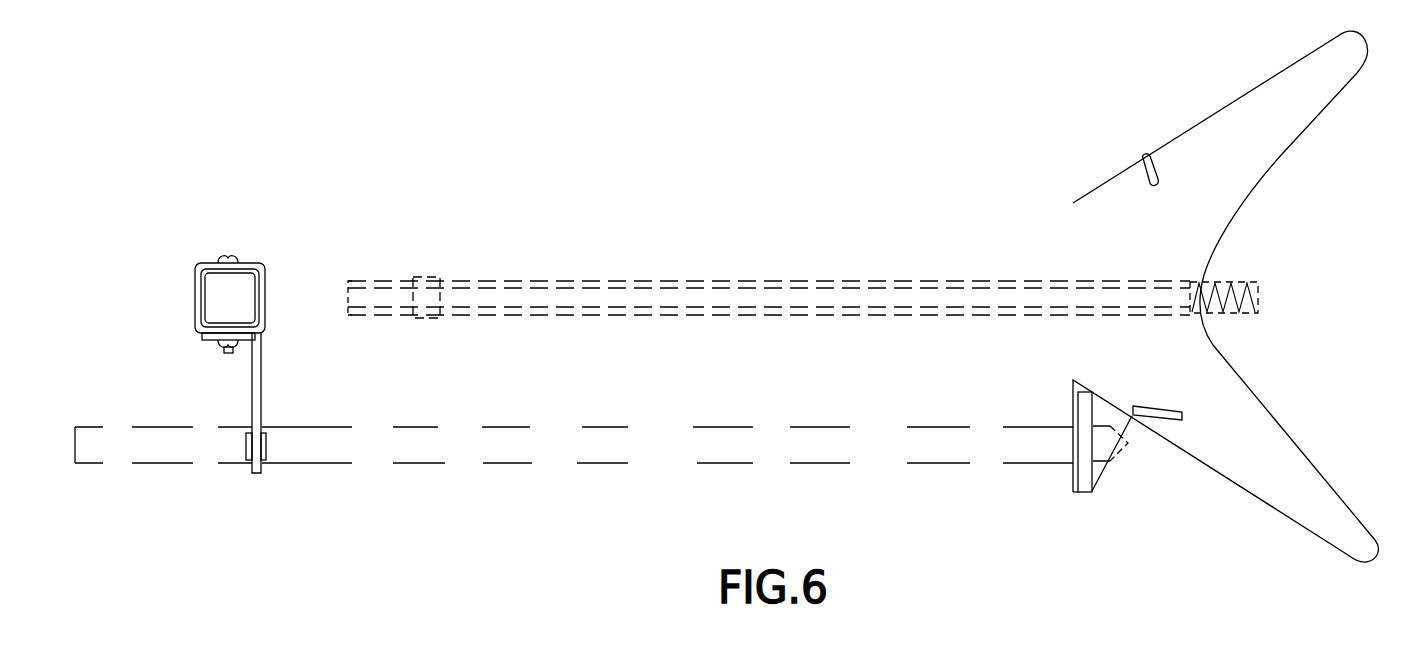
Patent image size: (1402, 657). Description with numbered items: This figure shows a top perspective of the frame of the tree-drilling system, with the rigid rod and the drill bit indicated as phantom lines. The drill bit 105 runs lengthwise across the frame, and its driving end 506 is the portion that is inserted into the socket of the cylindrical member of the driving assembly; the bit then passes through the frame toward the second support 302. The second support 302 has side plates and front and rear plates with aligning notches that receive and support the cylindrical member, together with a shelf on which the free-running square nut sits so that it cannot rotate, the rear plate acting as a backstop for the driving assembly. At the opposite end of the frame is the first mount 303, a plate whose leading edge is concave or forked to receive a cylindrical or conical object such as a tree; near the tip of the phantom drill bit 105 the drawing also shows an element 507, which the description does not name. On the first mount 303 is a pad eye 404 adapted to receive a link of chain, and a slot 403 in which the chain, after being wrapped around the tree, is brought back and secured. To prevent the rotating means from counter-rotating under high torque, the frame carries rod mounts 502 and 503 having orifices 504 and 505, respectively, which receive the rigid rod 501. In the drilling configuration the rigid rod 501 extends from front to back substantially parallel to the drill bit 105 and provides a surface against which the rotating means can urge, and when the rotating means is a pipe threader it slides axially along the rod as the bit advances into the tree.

The drill bit 105 is at (731, 285).
The second support 302 is at (254, 263).
The first mount 303 is at (1212, 140).
The slot 403 is at (1146, 160).
The pad eye 404 is at (1167, 418).
The rigid rod 501 is at (840, 458).
The rod mount 502 is at (1122, 420).
The rod mount 503 is at (258, 392).
The orifice 504 is at (1070, 455).
The orifice 505 is at (262, 446).
The driving end 506 is at (382, 288).
The spring 507 is at (1237, 280).